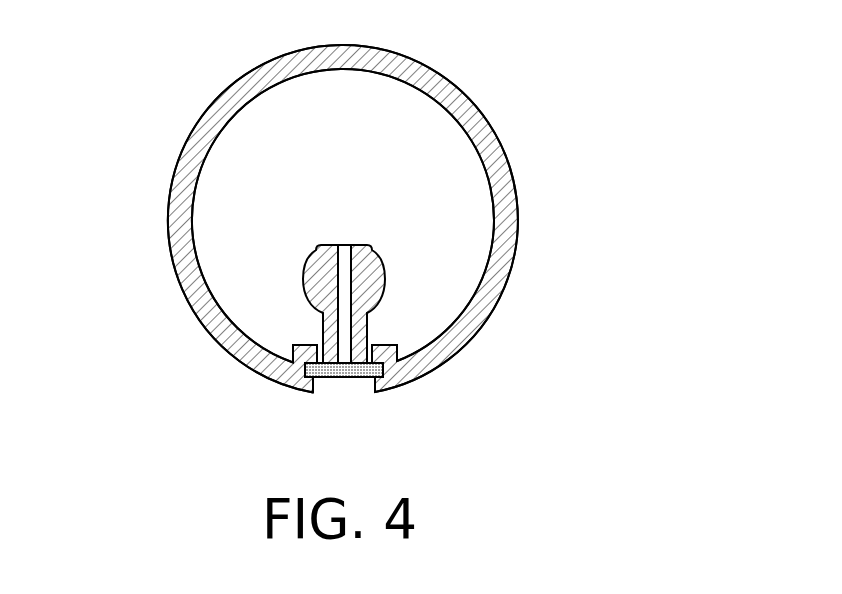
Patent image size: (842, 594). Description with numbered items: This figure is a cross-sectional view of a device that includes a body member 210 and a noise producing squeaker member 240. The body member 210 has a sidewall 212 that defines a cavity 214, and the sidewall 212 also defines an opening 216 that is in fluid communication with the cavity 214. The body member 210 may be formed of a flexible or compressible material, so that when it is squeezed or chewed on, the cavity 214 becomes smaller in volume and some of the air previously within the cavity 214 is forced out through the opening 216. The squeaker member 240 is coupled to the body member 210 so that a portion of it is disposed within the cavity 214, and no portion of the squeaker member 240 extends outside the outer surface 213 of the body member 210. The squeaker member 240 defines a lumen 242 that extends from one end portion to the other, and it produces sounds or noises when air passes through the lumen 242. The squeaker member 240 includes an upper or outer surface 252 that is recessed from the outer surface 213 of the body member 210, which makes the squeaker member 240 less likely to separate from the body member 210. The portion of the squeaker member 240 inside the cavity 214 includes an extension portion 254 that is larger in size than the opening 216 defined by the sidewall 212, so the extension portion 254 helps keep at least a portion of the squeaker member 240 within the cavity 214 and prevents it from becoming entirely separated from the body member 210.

The body member 210 is at (456, 92).
The sidewall 212 is at (508, 173).
The outer surface 213 is at (440, 365).
The cavity 214 is at (278, 278).
The opening 216 is at (342, 387).
The squeaker member 240 is at (413, 307).
The lumen 242 is at (343, 280).
The upper or outer surface 252 is at (330, 377).
The extension portion 254 is at (306, 258).